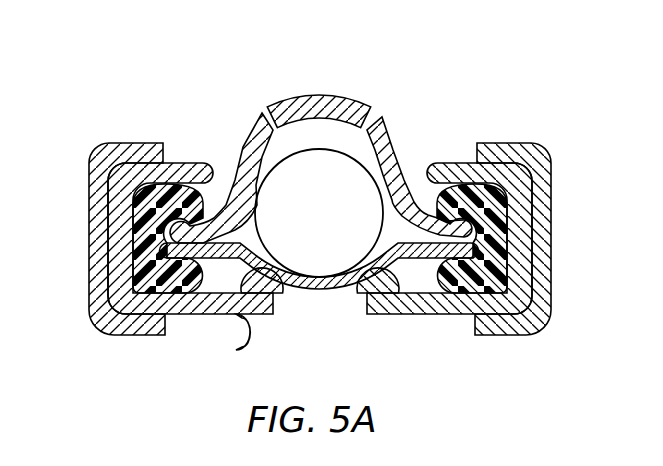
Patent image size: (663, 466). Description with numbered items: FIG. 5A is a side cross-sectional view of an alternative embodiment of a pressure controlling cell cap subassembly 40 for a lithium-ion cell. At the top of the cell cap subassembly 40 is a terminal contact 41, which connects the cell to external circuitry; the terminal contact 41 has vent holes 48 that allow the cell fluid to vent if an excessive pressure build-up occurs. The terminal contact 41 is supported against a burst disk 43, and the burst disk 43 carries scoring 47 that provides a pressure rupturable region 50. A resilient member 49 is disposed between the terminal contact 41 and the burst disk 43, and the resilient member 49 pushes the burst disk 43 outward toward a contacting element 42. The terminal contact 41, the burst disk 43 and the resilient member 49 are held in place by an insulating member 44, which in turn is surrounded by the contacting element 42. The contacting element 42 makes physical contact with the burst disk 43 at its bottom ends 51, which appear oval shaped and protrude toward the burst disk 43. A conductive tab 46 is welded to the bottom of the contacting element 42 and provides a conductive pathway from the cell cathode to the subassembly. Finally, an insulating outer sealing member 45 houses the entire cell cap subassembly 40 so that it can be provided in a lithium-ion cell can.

The cell cap subassembly 40 is at (222, 68).
The terminal contact 41 is at (312, 100).
The contacting element 42 is at (118, 297).
The burst disk 43 is at (423, 257).
The insulating member 44 is at (138, 246).
The insulating outer sealing member 45 is at (98, 255).
The conductive tab 46 is at (232, 347).
The scoring 47 is at (390, 268).
The vent holes 48 is at (372, 115).
The resilient member 49 is at (328, 163).
The pressure rupturable region 50 is at (312, 284).
The bottom ends 51 is at (271, 312).